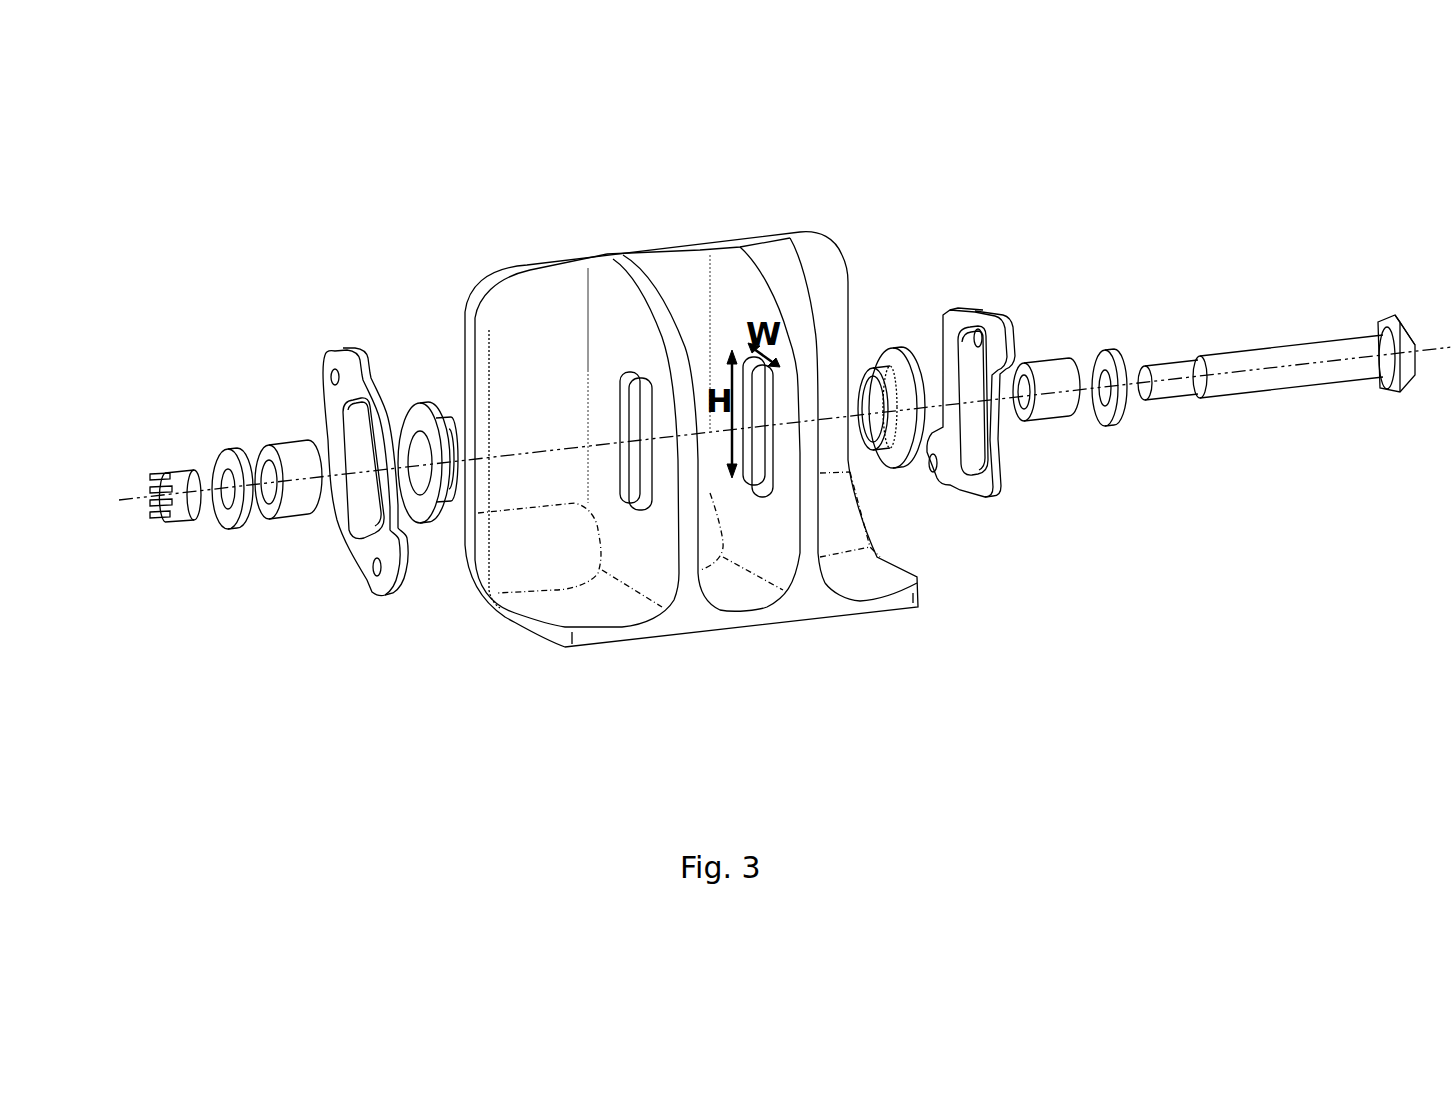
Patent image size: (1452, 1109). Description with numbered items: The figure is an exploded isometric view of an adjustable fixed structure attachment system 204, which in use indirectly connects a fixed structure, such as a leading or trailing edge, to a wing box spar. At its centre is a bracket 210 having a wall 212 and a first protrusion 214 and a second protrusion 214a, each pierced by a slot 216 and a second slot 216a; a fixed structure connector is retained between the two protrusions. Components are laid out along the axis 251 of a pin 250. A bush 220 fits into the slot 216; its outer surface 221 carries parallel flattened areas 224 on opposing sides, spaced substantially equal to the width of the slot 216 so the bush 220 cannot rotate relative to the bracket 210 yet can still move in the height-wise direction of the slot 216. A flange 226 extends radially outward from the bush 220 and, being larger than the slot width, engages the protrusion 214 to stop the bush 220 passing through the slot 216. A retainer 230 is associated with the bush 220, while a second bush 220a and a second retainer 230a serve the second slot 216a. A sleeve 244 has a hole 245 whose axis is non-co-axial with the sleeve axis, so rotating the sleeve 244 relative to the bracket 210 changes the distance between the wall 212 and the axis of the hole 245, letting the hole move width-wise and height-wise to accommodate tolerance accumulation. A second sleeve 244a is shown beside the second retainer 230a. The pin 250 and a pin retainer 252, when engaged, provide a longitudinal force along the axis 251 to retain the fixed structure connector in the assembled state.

The adjustable fixed structure attachment system 204 is at (345, 207).
The bracket 210 is at (667, 243).
The wall 212 is at (530, 260).
The protrusion 214 is at (618, 313).
The second protrusion 214a is at (743, 313).
The slot 216 is at (633, 470).
The second slot 216a is at (760, 467).
The bush 220 is at (420, 400).
The second bush 220a is at (895, 350).
The outer surface 221 is at (447, 405).
The flattened areas 224 is at (453, 477).
The flange 226 is at (428, 513).
The retainer 230 is at (353, 355).
The second retainer 230a is at (960, 308).
The sleeve 244 is at (297, 447).
The spacer 244a is at (1053, 358).
The hole 245 is at (270, 490).
The pin 250 is at (1323, 345).
The axis 251 is at (125, 500).
The pin retainer 252 is at (183, 463).